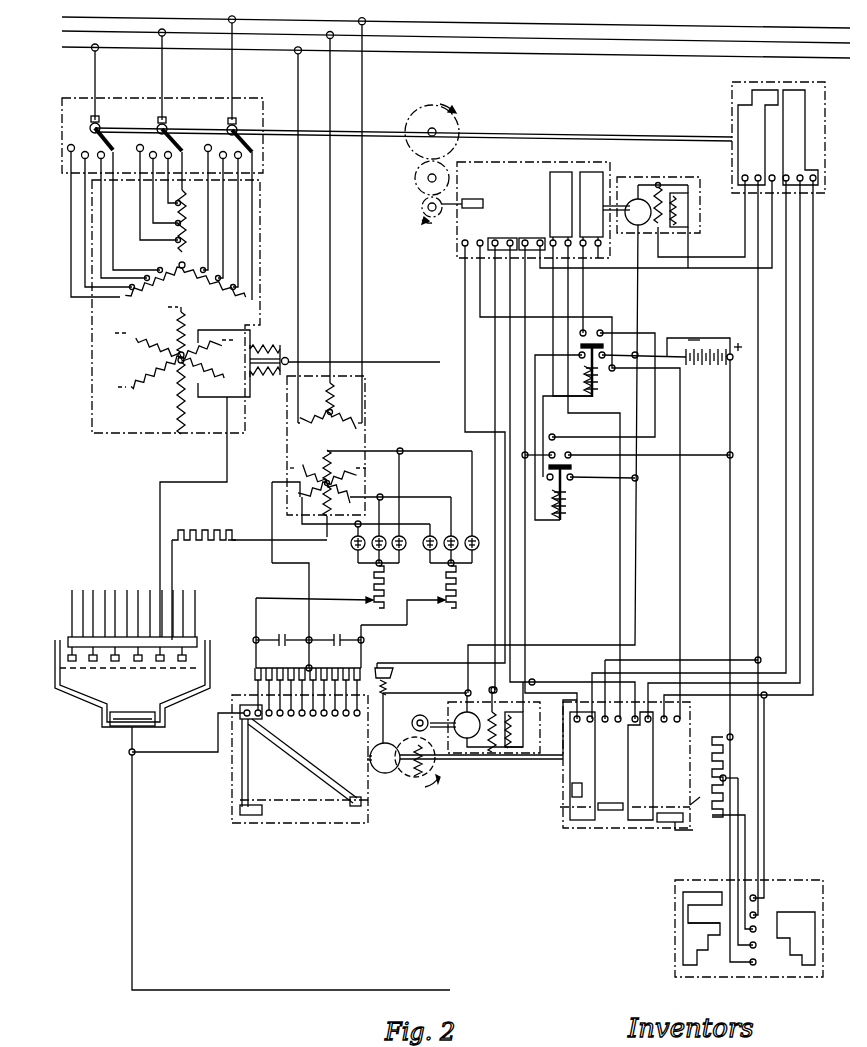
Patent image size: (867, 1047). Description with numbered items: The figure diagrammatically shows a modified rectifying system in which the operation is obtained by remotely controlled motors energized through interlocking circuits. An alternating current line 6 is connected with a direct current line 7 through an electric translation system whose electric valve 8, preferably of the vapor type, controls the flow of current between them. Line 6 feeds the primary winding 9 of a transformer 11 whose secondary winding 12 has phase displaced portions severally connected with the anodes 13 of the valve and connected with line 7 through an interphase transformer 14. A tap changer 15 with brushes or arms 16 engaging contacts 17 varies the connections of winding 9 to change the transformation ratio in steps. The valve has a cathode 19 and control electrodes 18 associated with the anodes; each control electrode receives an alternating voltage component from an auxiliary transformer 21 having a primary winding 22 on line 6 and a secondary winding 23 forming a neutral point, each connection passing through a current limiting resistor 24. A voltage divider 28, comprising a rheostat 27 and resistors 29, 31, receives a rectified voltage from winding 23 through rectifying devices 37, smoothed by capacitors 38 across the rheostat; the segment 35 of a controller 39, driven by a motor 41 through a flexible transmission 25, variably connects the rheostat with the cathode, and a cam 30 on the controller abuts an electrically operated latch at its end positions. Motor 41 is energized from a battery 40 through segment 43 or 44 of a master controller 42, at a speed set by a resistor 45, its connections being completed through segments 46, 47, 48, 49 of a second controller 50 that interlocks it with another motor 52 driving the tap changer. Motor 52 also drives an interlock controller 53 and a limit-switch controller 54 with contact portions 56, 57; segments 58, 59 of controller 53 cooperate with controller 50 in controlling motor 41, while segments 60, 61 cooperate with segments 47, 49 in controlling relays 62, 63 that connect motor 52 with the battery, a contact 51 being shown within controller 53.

The alternating current line 6 is at (594, 27).
The direct current line 7 is at (404, 362).
The electric valve 8 is at (132, 669).
The primary winding 9 is at (153, 300).
The transformer 11 is at (92, 343).
The secondary winding 12 is at (140, 390).
The anodes 13 is at (150, 662).
The interphase transformer 14 is at (265, 347).
The tap changer 15 is at (174, 125).
The brushes or arms 16 is at (244, 152).
The contacts 17 is at (230, 135).
The control electrodes 18 is at (162, 665).
The cathode 19 is at (114, 726).
The auxiliary transformer 21 is at (342, 446).
The primary winding 22 is at (330, 404).
The secondary winding 23 is at (312, 468).
The current limiting resistor 24 is at (196, 530).
The flexible transmission 25 is at (410, 775).
The rheostat 27 is at (288, 672).
The voltage divider 28 is at (299, 746).
The resistor 29 is at (372, 596).
The cam 30 is at (380, 774).
The resistor 31 is at (456, 610).
The segment 35 is at (250, 816).
The rectifying devices 37 is at (404, 550).
The capacitors 38 is at (282, 634).
The controller 39 is at (330, 818).
The battery 40 is at (706, 366).
The motor 41 is at (450, 708).
The master controller 42 is at (683, 896).
The segment 43 is at (688, 935).
The segment 44 is at (794, 915).
The resistor 45 is at (714, 820).
The segment 46 is at (572, 790).
The segment 47 is at (606, 812).
The segment 48 is at (640, 822).
The segment 49 is at (672, 824).
The second controller 50 is at (616, 778).
The contact 51 is at (475, 199).
The motor 52 is at (705, 216).
The interlock controller 53 is at (507, 181).
The controller 54 is at (761, 128).
The contact segment 56 is at (760, 92).
The contact segment 57 is at (796, 92).
The segment 58 is at (492, 238).
The segment 59 is at (532, 238).
The segment 60 is at (556, 172).
The segment 61 is at (590, 172).
The relay 62 is at (570, 508).
The relay 63 is at (600, 384).